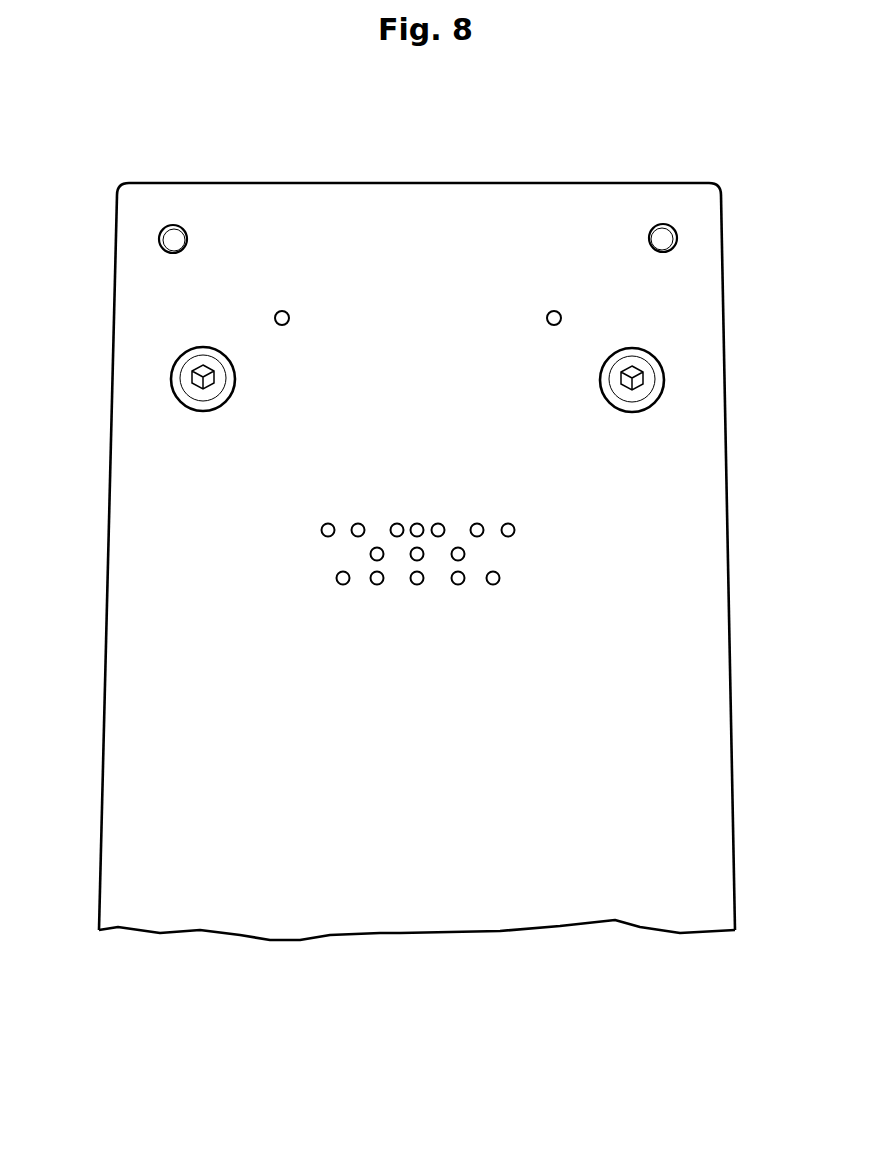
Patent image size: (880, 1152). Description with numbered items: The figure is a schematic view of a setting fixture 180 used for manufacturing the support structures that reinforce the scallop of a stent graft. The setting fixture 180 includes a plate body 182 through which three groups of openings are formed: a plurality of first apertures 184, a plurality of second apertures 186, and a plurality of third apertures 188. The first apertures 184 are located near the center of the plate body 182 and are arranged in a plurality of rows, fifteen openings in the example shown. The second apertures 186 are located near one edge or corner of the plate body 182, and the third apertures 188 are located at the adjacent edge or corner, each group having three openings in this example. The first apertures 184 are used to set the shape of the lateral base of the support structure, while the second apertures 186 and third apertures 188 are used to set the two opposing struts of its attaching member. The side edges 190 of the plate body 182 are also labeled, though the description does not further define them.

The setting fixture 180 is at (679, 158).
The plate body 182 is at (428, 204).
The first apertures 184 is at (321, 530).
The second apertures 186 is at (275, 317).
The third apertures 188 is at (561, 318).
The side edge 190 is at (106, 616).